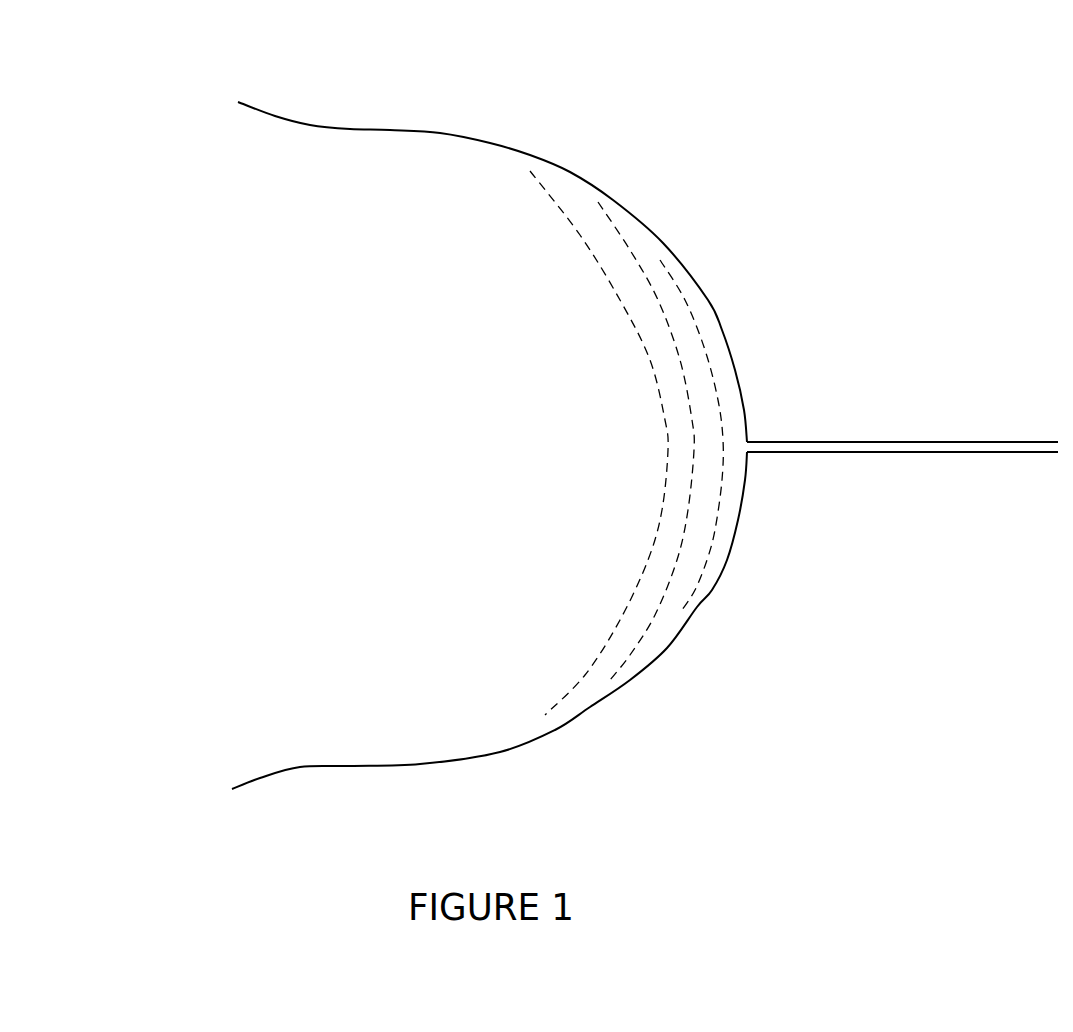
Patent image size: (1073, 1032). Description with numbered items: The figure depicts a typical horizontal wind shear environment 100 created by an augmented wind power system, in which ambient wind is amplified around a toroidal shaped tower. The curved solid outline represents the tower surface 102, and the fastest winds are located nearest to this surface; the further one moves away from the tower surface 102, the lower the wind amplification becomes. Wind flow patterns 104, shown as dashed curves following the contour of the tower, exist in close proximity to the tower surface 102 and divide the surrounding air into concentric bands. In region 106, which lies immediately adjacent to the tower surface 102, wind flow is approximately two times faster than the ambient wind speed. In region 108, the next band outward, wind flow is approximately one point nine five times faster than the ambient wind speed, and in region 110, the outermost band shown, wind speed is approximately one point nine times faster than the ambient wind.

The horizontal wind shear environment 100 is at (581, 415).
The tower surface 102 is at (570, 172).
The wind flow patterns 104 is at (685, 443).
The region 106 is at (714, 336).
The region 108 is at (710, 419).
The region 110 is at (680, 495).